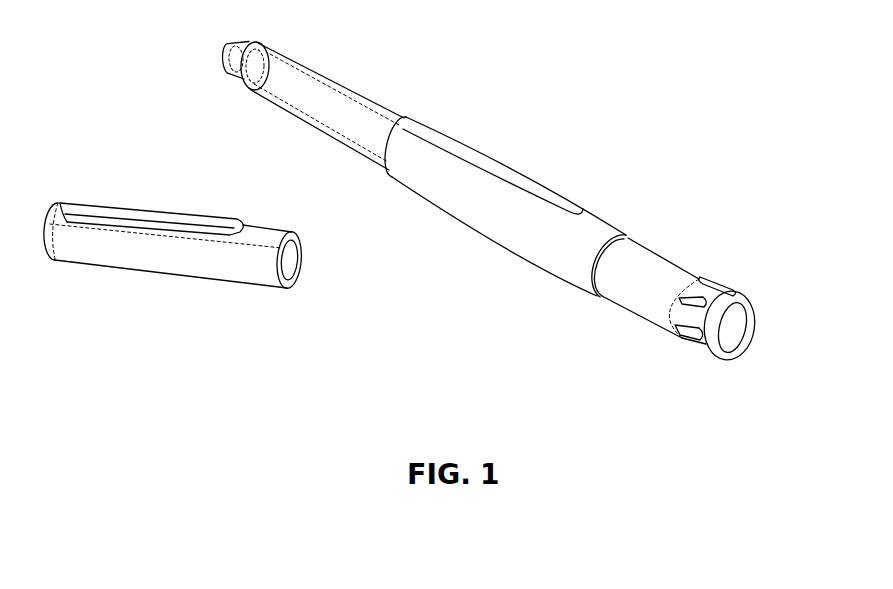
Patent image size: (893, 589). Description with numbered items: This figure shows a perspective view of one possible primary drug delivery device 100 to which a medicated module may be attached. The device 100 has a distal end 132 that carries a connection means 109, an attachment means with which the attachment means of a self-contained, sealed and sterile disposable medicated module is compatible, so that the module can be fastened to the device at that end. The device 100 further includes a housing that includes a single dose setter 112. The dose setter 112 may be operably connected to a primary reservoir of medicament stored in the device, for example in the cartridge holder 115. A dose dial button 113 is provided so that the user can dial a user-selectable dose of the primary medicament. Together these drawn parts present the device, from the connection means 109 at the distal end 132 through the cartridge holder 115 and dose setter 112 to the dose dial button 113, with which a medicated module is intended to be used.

The drug delivery device 100 is at (456, 142).
The connection means 109 is at (240, 35).
The single dose setter 112 is at (652, 252).
The dose dial button 113 is at (723, 278).
The cartridge holder 115 is at (317, 67).
The distal end 132 is at (163, 124).